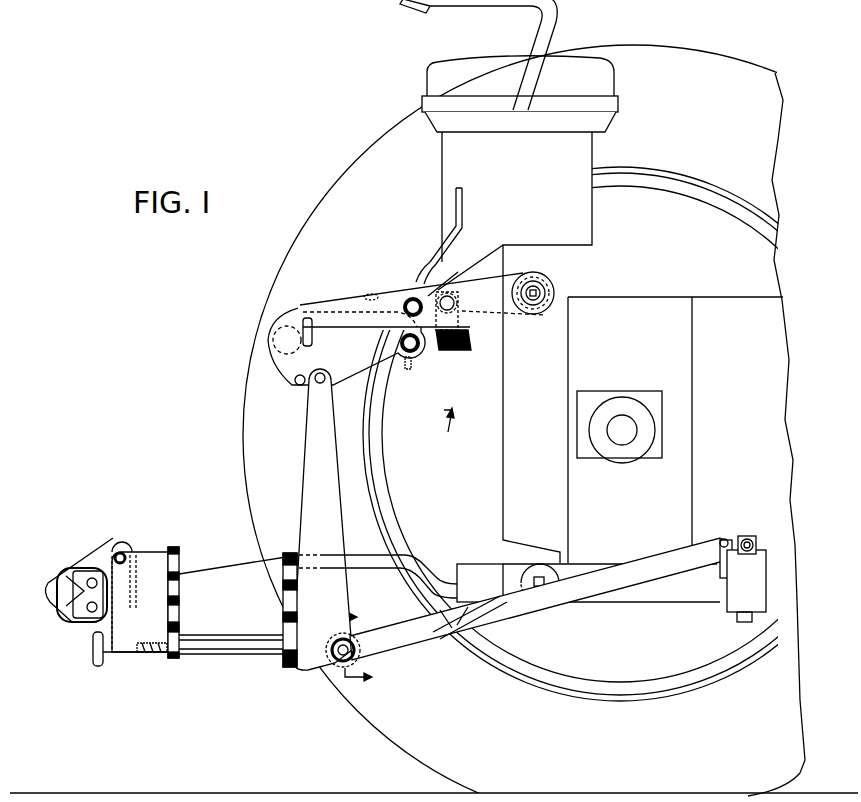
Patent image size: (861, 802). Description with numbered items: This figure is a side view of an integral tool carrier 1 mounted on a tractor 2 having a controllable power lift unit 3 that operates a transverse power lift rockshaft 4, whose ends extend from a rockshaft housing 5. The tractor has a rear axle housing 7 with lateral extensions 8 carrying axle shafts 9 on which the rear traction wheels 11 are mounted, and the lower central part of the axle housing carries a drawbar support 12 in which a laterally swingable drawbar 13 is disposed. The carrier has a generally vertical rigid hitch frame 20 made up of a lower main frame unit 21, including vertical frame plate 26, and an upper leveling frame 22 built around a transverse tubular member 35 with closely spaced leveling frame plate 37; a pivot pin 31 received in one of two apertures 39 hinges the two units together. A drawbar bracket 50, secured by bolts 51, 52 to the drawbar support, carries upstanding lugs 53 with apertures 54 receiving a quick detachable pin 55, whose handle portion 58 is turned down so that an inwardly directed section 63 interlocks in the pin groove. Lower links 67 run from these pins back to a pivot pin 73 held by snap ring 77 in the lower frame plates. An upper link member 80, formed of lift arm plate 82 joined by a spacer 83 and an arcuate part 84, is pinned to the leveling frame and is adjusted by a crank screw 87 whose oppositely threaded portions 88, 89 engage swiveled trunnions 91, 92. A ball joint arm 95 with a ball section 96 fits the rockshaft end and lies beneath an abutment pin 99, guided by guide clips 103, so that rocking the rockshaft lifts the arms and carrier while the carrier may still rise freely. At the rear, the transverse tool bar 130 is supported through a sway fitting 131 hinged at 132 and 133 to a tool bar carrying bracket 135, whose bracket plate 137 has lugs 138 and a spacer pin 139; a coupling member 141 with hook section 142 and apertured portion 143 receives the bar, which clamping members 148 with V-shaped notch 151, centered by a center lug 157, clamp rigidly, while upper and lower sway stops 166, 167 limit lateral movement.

The tool carrier 1 is at (321, 275).
The tractor 2 is at (735, 290).
The power lift unit 3 is at (397, 548).
The power lift rockshaft 4 is at (546, 292).
The power lift rockshaft housing 5 is at (509, 281).
The rear axle housing 7 is at (694, 342).
The lateral extensions 8 is at (648, 405).
The axle shafts 9 is at (624, 428).
The rear traction wheels 11 is at (700, 62).
The drawbar support 12 is at (478, 568).
The drawbar 13 is at (360, 556).
The hitch frame 20 is at (296, 436).
The lower main frame unit 21 is at (298, 512).
The leveling frame 22 is at (350, 386).
The frame plate 26 is at (308, 476).
The pivot pin 31 is at (324, 374).
The transverse tubular member 35 is at (273, 340).
The leveling frame plate 37 is at (369, 346).
The apertures 39 is at (296, 383).
The drawbar bracket 50 is at (617, 608).
The bolt 51 is at (540, 575).
The bolt 52 is at (742, 618).
The upstanding lugs 53 is at (765, 565).
The apertures 54 is at (722, 536).
The quick detachable pin 55 is at (306, 320).
The handle portion 58 is at (719, 570).
The inwardly directed section 63 is at (747, 538).
The lower links 67 is at (462, 626).
The pivot pin 73 is at (332, 644).
The snap ring 77 is at (335, 662).
The upper link member 80 is at (380, 292).
The lift arm plate 82 is at (451, 292).
The spacer 83 is at (368, 296).
The arcuate part 84 is at (532, 272).
The crank screw 87 is at (436, 252).
The threaded portion 88 is at (418, 275).
The threaded portion 89 is at (412, 366).
The swiveled trunnion 91 is at (410, 298).
The swiveled trunnion 92 is at (407, 360).
The ball joint arm 95 is at (493, 296).
The ball section 96 is at (542, 282).
The abutment pin 99 is at (447, 285).
The guide clips 103 is at (475, 358).
The tool bar 130 is at (93, 598).
The sway fitting 131 is at (200, 566).
The hinge connection 132 is at (270, 560).
The hinge connection 133 is at (172, 548).
The tool bar carrying bracket 135 is at (138, 652).
The bracket plate 137 is at (142, 558).
The lugs 138 is at (94, 636).
The pin 139 is at (124, 554).
The coupling member 141 is at (80, 552).
The hook section 142 is at (133, 548).
The apertured portion 143 is at (66, 583).
The clamping members 148 is at (94, 598).
The V-shaped notch 151 is at (72, 588).
The center lug 157 is at (64, 575).
The upper sway stop 166 is at (218, 642).
The lower sway stop 167 is at (246, 655).